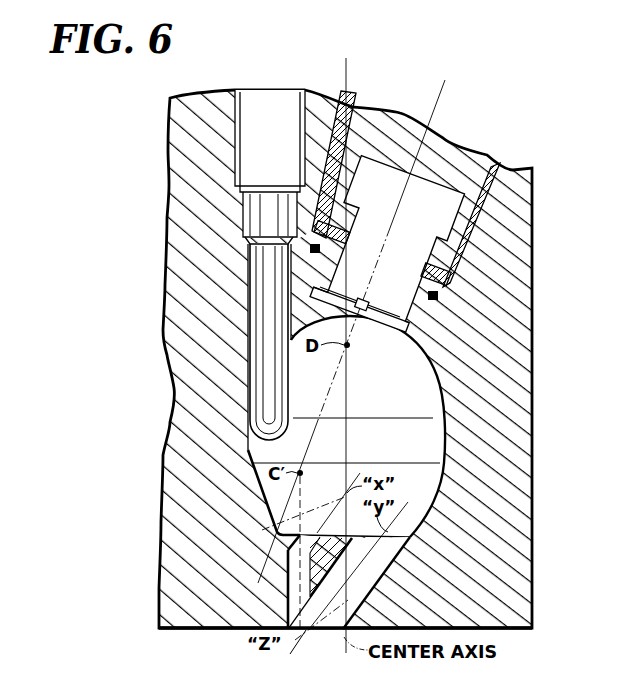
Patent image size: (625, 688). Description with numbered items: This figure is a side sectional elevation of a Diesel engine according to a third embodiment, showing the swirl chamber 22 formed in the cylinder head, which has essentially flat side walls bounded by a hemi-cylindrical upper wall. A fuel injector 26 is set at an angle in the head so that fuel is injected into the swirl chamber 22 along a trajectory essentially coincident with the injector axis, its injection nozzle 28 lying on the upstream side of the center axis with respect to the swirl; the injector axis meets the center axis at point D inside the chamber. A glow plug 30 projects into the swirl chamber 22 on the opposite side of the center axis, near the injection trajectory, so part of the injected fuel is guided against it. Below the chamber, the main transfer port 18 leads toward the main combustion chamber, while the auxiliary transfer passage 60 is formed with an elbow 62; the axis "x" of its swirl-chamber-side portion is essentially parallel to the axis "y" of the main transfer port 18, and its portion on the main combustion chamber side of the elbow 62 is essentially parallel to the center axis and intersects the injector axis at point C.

The main transfer port 18 is at (323, 630).
The swirl chamber 22 is at (418, 396).
The fuel injector 26 is at (398, 118).
The injection nozzle 28 is at (368, 298).
The glow plug 30 is at (262, 291).
The auxiliary transfer passage 60 is at (283, 588).
The elbow 62 is at (287, 549).